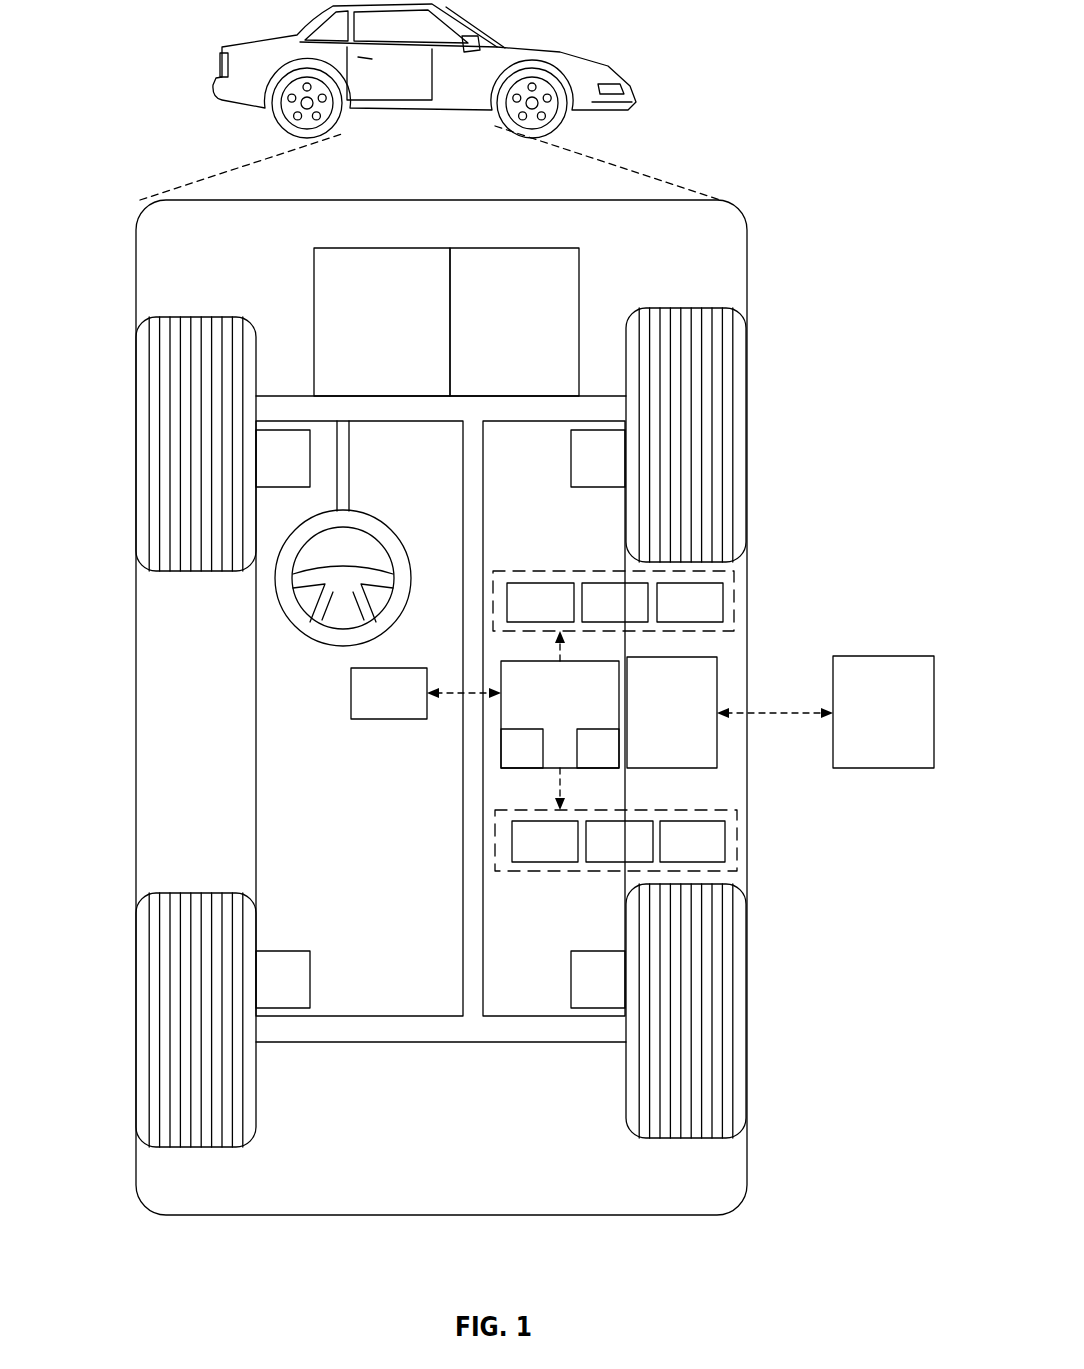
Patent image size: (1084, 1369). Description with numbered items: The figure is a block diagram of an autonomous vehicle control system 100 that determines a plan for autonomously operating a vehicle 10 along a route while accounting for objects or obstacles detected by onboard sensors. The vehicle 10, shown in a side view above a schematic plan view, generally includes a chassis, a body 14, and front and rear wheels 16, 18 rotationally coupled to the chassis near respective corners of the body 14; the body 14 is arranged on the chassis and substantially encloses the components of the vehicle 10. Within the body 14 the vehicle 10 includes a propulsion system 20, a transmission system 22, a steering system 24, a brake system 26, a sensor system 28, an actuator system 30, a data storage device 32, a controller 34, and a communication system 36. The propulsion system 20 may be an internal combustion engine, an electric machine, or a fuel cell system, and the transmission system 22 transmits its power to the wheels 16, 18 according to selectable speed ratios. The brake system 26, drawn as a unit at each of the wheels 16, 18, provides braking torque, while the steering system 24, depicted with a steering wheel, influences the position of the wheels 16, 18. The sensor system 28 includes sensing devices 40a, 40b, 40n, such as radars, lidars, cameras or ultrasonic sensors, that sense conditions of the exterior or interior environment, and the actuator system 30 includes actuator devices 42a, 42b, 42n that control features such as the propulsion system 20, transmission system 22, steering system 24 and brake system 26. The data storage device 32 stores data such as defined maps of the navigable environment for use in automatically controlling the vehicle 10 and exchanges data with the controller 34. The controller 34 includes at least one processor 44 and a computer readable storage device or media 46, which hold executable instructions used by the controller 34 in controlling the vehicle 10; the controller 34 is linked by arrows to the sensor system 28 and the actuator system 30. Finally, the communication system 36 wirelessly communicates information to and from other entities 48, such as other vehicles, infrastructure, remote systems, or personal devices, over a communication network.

The vehicle 10 is at (220, 68).
The autonomous vehicle control system 100 is at (788, 186).
The body 14 is at (136, 708).
The front wheels 16 is at (441, 439).
The rear wheels 18 is at (441, 1015).
The propulsion system 20 is at (382, 322).
The transmission system 22 is at (514, 322).
The steering system 24 is at (380, 448).
The brake system 26 is at (440, 719).
The sensor system 28 is at (613, 565).
The actuator system 30 is at (616, 875).
The data storage device 32 is at (389, 693).
The controller 34 is at (560, 714).
The communication system 36 is at (672, 712).
The sensing device 40a is at (540, 602).
The sensing device 40b is at (615, 602).
The sensing device 40n is at (690, 602).
The actuator device 42a is at (545, 841).
The actuator device 42b is at (619, 841).
The actuator device 42n is at (692, 841).
The processor 44 is at (522, 748).
The computer readable storage device or media 46 is at (598, 748).
The other entities 48 is at (883, 712).